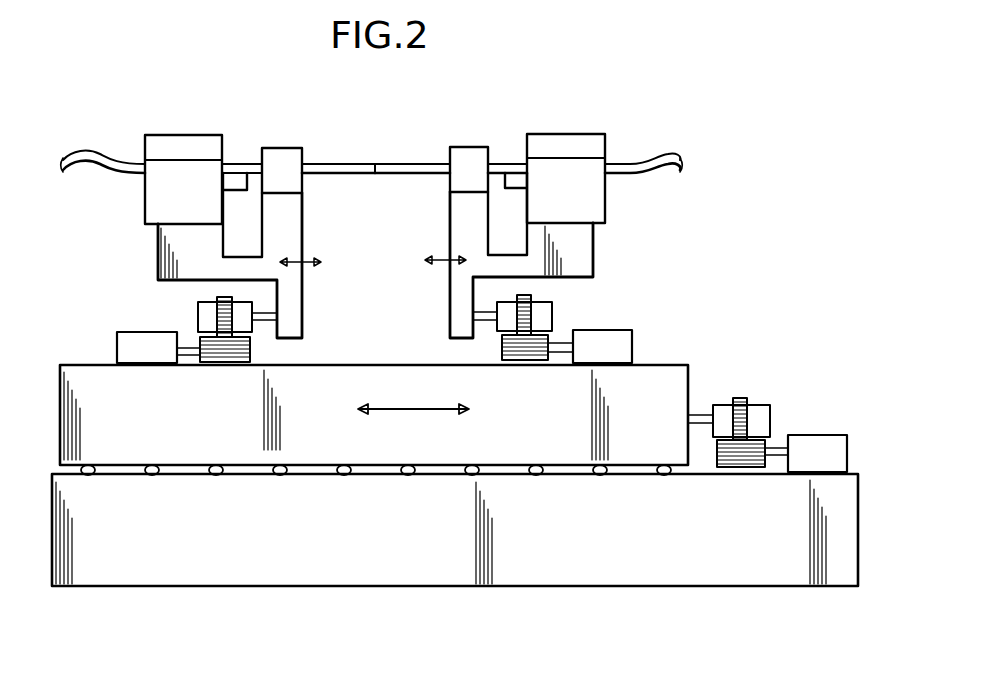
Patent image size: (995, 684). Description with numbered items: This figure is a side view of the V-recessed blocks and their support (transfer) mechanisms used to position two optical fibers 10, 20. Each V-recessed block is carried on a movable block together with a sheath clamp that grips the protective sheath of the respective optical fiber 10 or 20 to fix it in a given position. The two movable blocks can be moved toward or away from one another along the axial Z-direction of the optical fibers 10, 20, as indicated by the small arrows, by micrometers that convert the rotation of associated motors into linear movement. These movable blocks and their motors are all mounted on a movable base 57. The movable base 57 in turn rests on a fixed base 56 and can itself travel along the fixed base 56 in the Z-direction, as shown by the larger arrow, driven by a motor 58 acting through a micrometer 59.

The optical fiber 10 is at (340, 162).
The optical fiber 20 is at (406, 162).
The fixed base 56 is at (418, 586).
The movable base 57 is at (688, 364).
The motor 58 is at (820, 440).
The micrometer 59 is at (762, 405).